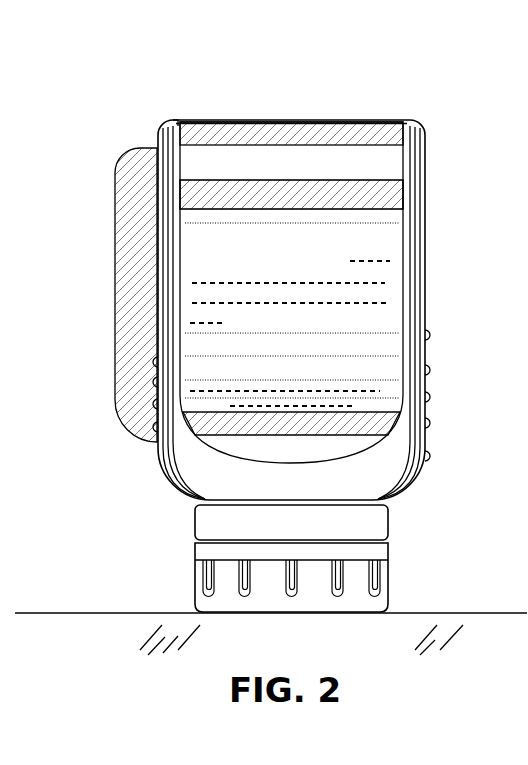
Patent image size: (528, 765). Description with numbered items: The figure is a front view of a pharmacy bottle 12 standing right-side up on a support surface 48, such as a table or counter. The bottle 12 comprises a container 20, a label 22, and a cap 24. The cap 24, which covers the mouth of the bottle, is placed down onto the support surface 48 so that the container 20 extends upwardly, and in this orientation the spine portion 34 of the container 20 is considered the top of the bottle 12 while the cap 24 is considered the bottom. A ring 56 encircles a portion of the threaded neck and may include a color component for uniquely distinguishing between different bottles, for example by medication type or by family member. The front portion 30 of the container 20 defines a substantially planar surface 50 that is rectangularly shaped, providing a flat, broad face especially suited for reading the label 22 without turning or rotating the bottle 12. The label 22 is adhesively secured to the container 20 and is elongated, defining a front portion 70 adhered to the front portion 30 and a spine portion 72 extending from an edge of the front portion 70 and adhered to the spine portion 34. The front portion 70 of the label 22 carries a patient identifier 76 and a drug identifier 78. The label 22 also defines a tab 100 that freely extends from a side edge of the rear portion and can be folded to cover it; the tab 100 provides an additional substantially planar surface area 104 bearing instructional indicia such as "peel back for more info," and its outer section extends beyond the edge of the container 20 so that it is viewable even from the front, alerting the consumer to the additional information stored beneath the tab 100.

The bottle 12 is at (287, 319).
The container 20 is at (355, 541).
The label 22 is at (328, 284).
The cap 24 is at (382, 605).
The front portion 30 is at (397, 457).
The spine portion 34 is at (172, 122).
The support surface 48 is at (150, 612).
The substantially planar surface 50 is at (403, 417).
The ring 56 is at (387, 527).
The front portion 70 is at (332, 262).
The spine portion 72 is at (342, 130).
The patient identifier 76 is at (380, 168).
The drug identifier 78 is at (370, 200).
The tab 100 is at (108, 285).
The substantially planar surface area 104 is at (133, 428).